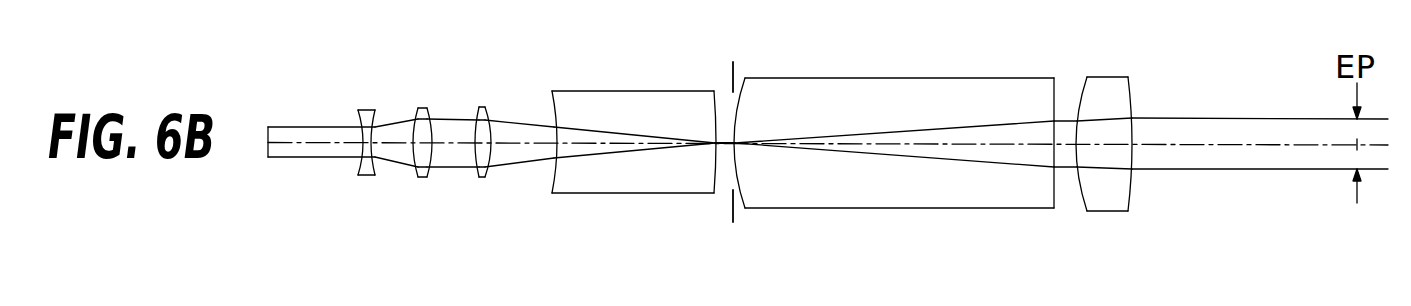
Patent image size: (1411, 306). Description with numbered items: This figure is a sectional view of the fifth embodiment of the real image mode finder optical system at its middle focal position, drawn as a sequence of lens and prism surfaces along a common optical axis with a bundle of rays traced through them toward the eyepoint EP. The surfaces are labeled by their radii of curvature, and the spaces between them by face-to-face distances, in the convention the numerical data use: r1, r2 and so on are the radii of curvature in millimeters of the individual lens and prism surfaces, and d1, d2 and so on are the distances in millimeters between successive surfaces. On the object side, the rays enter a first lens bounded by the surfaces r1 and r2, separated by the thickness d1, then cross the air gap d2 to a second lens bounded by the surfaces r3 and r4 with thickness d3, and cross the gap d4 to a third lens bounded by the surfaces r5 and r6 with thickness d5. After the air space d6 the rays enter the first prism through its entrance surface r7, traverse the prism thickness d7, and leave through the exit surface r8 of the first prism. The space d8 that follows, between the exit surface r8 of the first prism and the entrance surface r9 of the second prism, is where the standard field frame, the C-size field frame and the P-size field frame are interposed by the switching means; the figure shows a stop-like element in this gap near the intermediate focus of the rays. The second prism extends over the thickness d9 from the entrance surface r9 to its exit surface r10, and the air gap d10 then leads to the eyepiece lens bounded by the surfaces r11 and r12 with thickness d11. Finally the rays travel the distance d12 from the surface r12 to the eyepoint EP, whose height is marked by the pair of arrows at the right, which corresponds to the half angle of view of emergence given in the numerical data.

The radius of curvature of first lens surface r1 is at (358, 110).
The radius of curvature of second lens surface r2 is at (375, 110).
The radius of curvature of third lens surface r3 is at (416, 108).
The radius of curvature of fourth lens surface r4 is at (430, 110).
The radius of curvature of fifth lens surface r5 is at (478, 107).
The radius of curvature of sixth lens surface r6 is at (487, 109).
The radius of curvature of seventh surface r7 is at (548, 112).
The exit surface of the first prism r8 is at (716, 102).
The entrance surface of the second prism r9 is at (742, 86).
The radius of curvature of tenth surface r10 is at (1060, 95).
The radius of curvature of eleventh lens surface r11 is at (1080, 88).
The radius of curvature of twelfth lens surface r12 is at (1132, 96).
The distance between first and second surfaces d1 is at (357, 167).
The distance between second and third surfaces d2 is at (393, 145).
The distance between third and fourth surfaces d3 is at (420, 147).
The distance between fourth and fifth surfaces d4 is at (457, 146).
The distance between fifth and sixth surfaces d5 is at (483, 148).
The distance between sixth and seventh surfaces d6 is at (524, 145).
The distance between seventh and eighth surfaces d7 is at (638, 143).
The distance between eighth and ninth surfaces d8 is at (724, 147).
The distance between ninth and tenth surfaces d9 is at (898, 146).
The distance between tenth and eleventh surfaces d10 is at (1063, 146).
The distance between eleventh and twelfth surfaces d11 is at (1102, 146).
The distance from twelfth surface to eyepoint d12 is at (1240, 146).